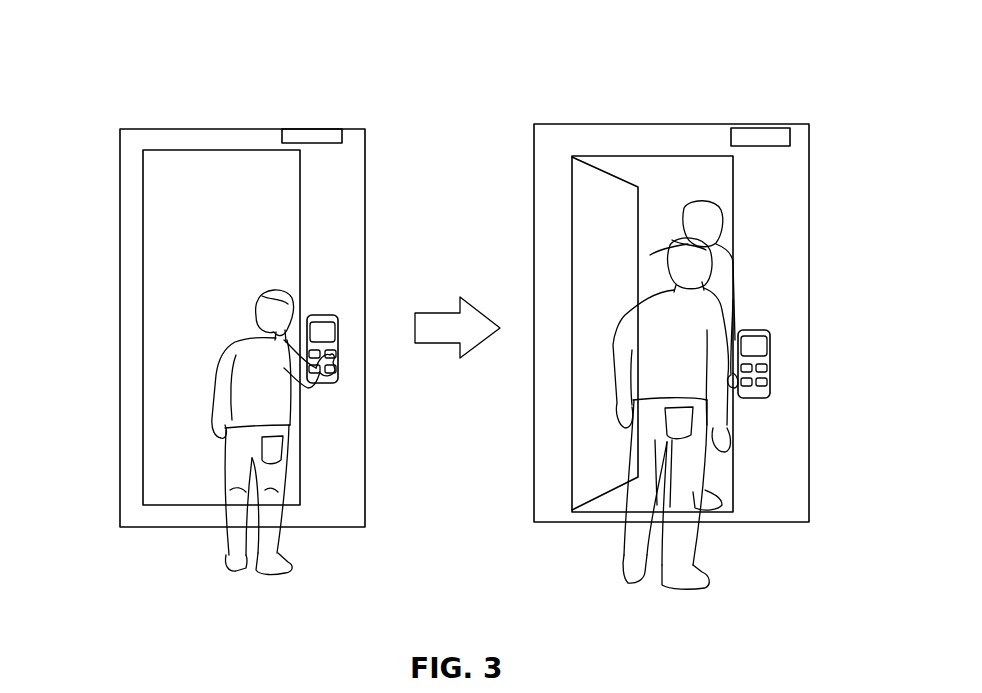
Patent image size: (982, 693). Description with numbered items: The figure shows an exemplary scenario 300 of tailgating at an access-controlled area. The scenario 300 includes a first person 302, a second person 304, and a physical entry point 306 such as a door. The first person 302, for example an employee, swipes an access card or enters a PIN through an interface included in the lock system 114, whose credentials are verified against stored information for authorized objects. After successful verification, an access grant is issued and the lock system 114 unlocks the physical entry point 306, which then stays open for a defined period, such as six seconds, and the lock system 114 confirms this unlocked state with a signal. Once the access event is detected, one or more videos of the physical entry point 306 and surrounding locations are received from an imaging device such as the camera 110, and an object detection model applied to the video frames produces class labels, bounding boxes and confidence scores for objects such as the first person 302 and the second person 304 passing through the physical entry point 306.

The exemplary scenario 300 is at (98, 64).
The camera 110 is at (310, 136).
The lock system 114 is at (338, 322).
The first person 302 is at (237, 518).
The second person 304 is at (646, 309).
The physical entry point 306 is at (142, 468).